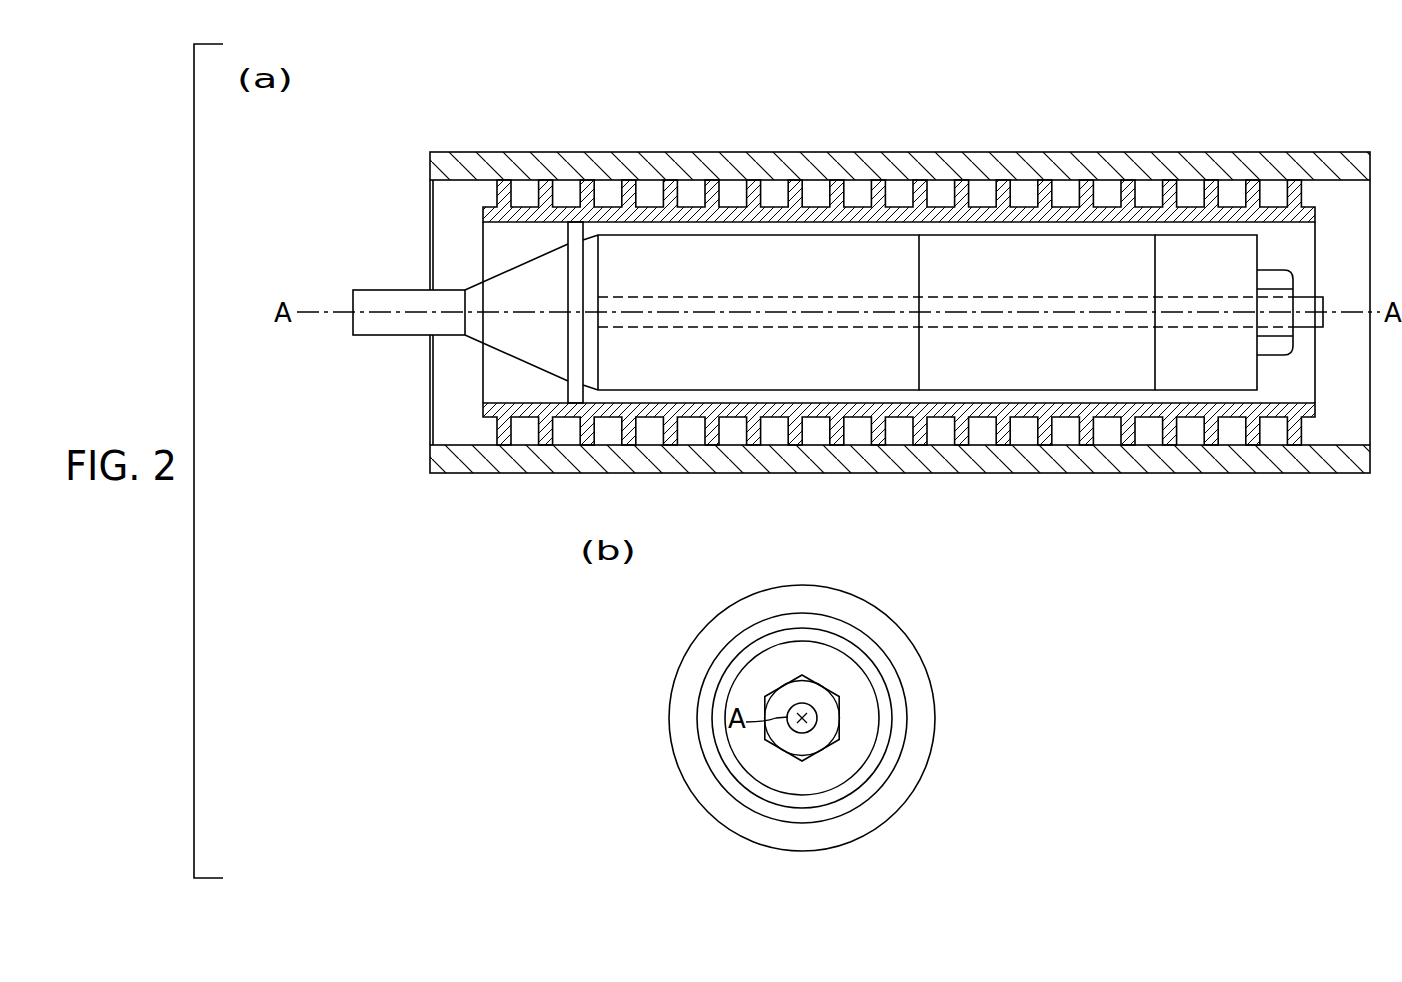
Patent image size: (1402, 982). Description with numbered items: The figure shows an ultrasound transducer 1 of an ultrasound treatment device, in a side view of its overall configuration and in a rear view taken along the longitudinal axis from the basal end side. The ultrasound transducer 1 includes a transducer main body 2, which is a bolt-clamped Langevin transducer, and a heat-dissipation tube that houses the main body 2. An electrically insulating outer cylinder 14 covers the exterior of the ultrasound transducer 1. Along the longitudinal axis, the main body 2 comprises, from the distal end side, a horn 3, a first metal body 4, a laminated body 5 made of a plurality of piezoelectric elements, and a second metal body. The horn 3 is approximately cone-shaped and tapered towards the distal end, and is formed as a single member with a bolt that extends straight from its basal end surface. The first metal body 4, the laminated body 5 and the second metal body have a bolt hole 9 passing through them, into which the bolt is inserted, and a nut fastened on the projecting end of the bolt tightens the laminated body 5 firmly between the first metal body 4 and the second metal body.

The ultrasound transducer 1 is at (395, 130).
The transducer main body 2 is at (447, 273).
The horn 3 is at (473, 343).
The first metal body 4 is at (780, 234).
The laminated body 5 is at (981, 233).
The bolt hole 9 is at (1031, 319).
The electrically insulating outer cylinder 14 is at (676, 152).